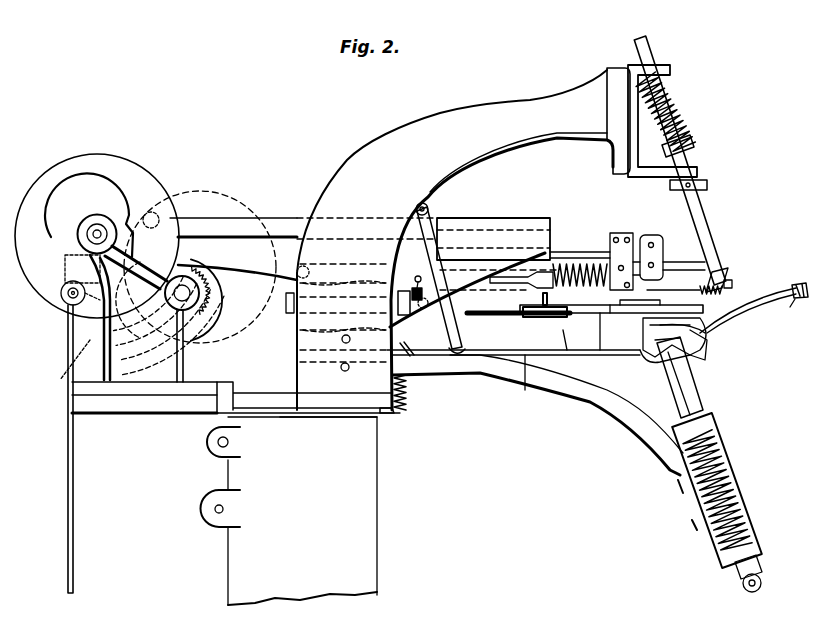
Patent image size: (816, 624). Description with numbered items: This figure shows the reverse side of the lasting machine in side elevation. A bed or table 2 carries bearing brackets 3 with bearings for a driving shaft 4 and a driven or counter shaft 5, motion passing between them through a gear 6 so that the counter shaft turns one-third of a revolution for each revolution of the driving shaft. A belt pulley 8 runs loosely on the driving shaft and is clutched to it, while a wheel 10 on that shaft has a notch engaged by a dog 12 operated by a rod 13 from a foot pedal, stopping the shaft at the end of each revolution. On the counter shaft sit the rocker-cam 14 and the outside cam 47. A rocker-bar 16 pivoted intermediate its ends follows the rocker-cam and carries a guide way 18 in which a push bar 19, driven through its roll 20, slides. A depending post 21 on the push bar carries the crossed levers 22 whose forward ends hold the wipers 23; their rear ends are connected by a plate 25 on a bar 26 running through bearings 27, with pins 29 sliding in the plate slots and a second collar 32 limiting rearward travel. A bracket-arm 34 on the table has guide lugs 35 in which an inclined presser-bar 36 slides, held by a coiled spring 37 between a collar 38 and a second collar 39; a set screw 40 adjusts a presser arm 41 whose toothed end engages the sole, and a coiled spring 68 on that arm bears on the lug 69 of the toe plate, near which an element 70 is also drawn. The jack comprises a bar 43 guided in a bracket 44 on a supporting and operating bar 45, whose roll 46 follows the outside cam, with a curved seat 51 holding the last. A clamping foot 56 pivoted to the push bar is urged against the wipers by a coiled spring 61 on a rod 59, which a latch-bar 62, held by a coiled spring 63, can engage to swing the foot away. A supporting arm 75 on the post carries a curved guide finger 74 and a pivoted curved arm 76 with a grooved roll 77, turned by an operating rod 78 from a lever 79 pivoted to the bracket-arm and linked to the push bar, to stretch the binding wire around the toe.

The bed or table 2 is at (228, 415).
The bearing brackets 3 is at (118, 396).
The driving shaft 4 is at (240, 262).
The driven or counter shaft 5 is at (96, 228).
The gear 6 is at (224, 304).
The belt pulley 8 is at (213, 199).
The wheel 10 is at (305, 270).
The dog 12 is at (62, 283).
The rod 13 is at (67, 553).
The rocker-cam 14 is at (48, 180).
The rocker-bar 16 is at (445, 340).
The supporting guide way 18 is at (510, 222).
The push bar 19 is at (270, 218).
The roll 20 is at (156, 213).
The depending post 21 is at (607, 236).
The crossed levers 22 is at (632, 343).
The wipers 23 is at (735, 322).
The plate 25 is at (546, 317).
The bar 26 is at (490, 312).
The bearings 27 is at (382, 416).
The pins or bolts 29 is at (566, 331).
The second collar 32 is at (427, 295).
The bracket-arm 34 is at (453, 118).
The guide lugs 35 is at (668, 71).
The presser-bar 36 is at (716, 240).
The coiled spring 37 is at (681, 111).
The collar 38 is at (694, 150).
The second collar 39 is at (708, 186).
The set screw 40 is at (727, 272).
The presser arm 41 is at (733, 283).
The bar 43 is at (702, 374).
The bracket 44 is at (705, 546).
The supporting and operating bar 45 is at (620, 420).
The roll 46 is at (66, 304).
The outside cam 47 is at (116, 196).
The curved seat 51 is at (705, 340).
The clamping foot 56 is at (660, 241).
The rod 59 is at (641, 236).
The coiled spring 61 is at (566, 262).
The latch-bar 62 is at (268, 278).
The coiled spring 63 is at (407, 392).
The coiled spring 68 is at (725, 312).
The lug 69 is at (700, 289).
The link 70 is at (668, 268).
The curved guide finger 74 is at (603, 315).
The supporting arm 75 is at (678, 352).
The curved arm 76 is at (795, 284).
The grooved roll 77 is at (797, 300).
The operating rod 78 is at (526, 390).
The lever 79 is at (432, 220).